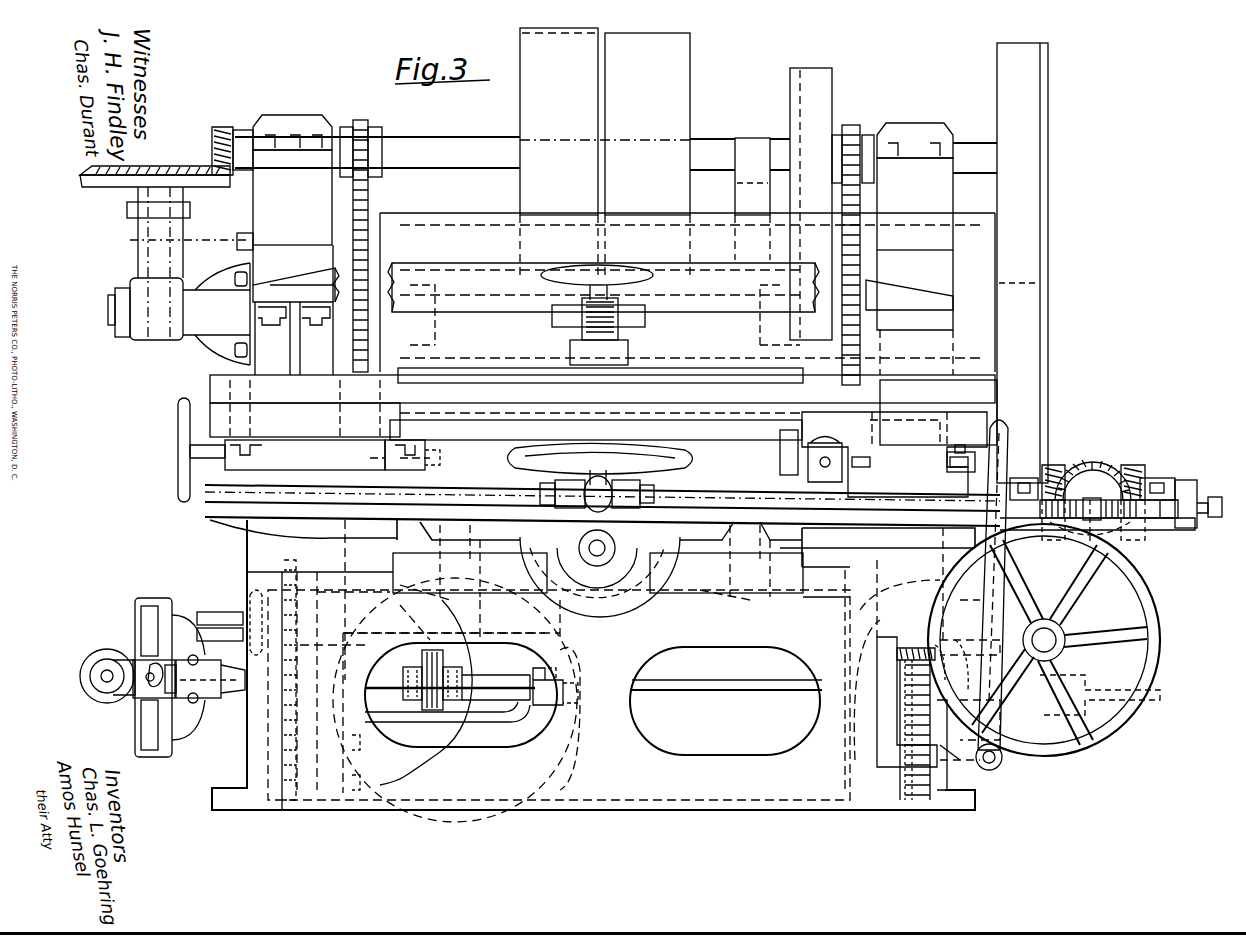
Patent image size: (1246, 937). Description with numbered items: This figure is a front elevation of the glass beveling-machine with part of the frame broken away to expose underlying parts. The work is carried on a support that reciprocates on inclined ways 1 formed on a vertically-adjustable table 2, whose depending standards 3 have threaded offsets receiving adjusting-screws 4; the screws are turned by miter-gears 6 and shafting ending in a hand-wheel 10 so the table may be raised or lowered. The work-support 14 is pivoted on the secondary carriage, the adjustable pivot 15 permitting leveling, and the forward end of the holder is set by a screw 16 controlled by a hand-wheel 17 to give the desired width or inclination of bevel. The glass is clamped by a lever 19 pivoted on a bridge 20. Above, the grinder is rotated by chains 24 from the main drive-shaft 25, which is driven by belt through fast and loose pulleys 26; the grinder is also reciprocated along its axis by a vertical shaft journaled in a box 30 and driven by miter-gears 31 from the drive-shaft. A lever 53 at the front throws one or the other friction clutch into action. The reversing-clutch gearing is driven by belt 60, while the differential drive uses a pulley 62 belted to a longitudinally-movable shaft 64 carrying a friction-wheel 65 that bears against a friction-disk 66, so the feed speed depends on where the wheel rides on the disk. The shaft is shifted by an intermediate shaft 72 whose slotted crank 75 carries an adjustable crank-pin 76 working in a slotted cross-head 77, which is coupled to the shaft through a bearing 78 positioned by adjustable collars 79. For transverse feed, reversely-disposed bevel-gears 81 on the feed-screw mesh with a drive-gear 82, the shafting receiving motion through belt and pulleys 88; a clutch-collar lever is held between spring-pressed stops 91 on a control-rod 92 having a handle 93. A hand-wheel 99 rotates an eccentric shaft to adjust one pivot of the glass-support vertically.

The inclined ways 1 is at (592, 580).
The vertically-adjustable table 2 is at (415, 768).
The vertically-guided standards 3 is at (880, 735).
The adjusting-screws 4 is at (948, 757).
The miter-gears 6 is at (895, 657).
The hand-wheel 10 is at (1156, 597).
The work-support 14 is at (602, 436).
The pivot 15 is at (440, 458).
The screw 16 is at (640, 480).
The hand-wheel 17 is at (695, 462).
The lever 19 is at (608, 317).
The bridge 20 is at (612, 327).
The chains 24 is at (370, 255).
The main drive-shaft 25 is at (458, 165).
The fast and loose pulleys 26 is at (605, 151).
The box 30 is at (179, 276).
The miter-gears 31 is at (166, 157).
The handle or lever 53 is at (998, 466).
The belt 60 is at (752, 185).
The pulley 62 is at (1047, 237).
The longitudinally-movable shaft 64 is at (490, 680).
The friction-wheel 65 is at (430, 704).
The friction-disk 66 is at (470, 714).
The intermediate shaft 72 is at (118, 702).
The slotted crank 75 is at (100, 695).
The crank-pin 76 is at (140, 708).
The slotted cross-head 77 is at (201, 676).
The bearing 78 is at (205, 679).
The adjustable collars 79 is at (172, 700).
The bevel-gears 81 is at (1136, 455).
The drive-gear 82 is at (1093, 466).
The belt and pulleys 88 is at (824, 204).
The spring-pressed stops 91 is at (1086, 505).
The control-rod 92 is at (1098, 524).
The handle 93 is at (1212, 500).
The hand-wheel 99 is at (194, 462).